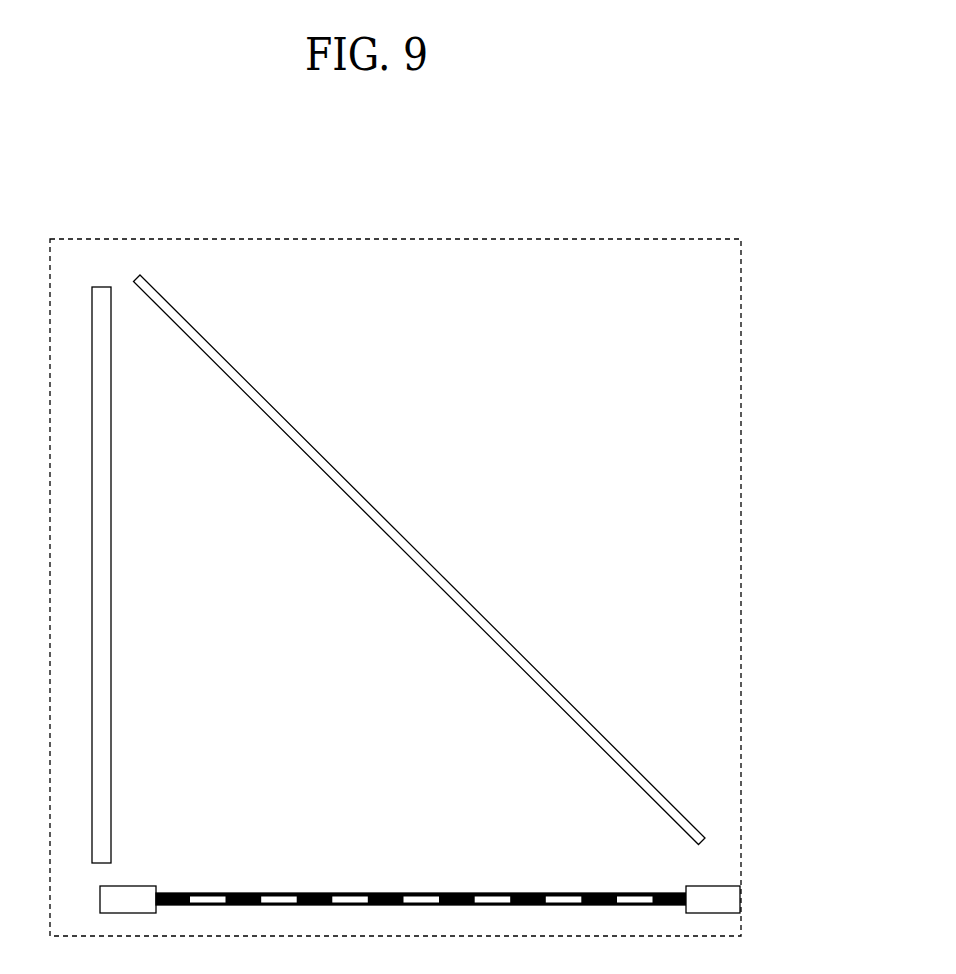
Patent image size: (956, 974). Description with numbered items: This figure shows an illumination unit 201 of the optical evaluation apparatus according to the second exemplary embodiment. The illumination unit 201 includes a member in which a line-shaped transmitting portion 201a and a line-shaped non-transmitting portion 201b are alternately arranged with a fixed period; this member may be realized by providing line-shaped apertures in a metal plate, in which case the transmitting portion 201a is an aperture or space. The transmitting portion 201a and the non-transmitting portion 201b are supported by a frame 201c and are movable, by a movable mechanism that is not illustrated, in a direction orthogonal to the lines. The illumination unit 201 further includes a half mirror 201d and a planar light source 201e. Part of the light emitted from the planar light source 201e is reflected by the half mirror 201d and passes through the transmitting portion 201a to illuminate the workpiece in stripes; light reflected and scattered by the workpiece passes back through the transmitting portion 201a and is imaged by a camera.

The illumination unit 201 is at (495, 239).
The transmitting portion 201a is at (278, 893).
The non-transmitting portion 201b is at (385, 893).
The frame 201c is at (728, 898).
The half mirror 201d is at (445, 543).
The planar light source 201e is at (105, 595).